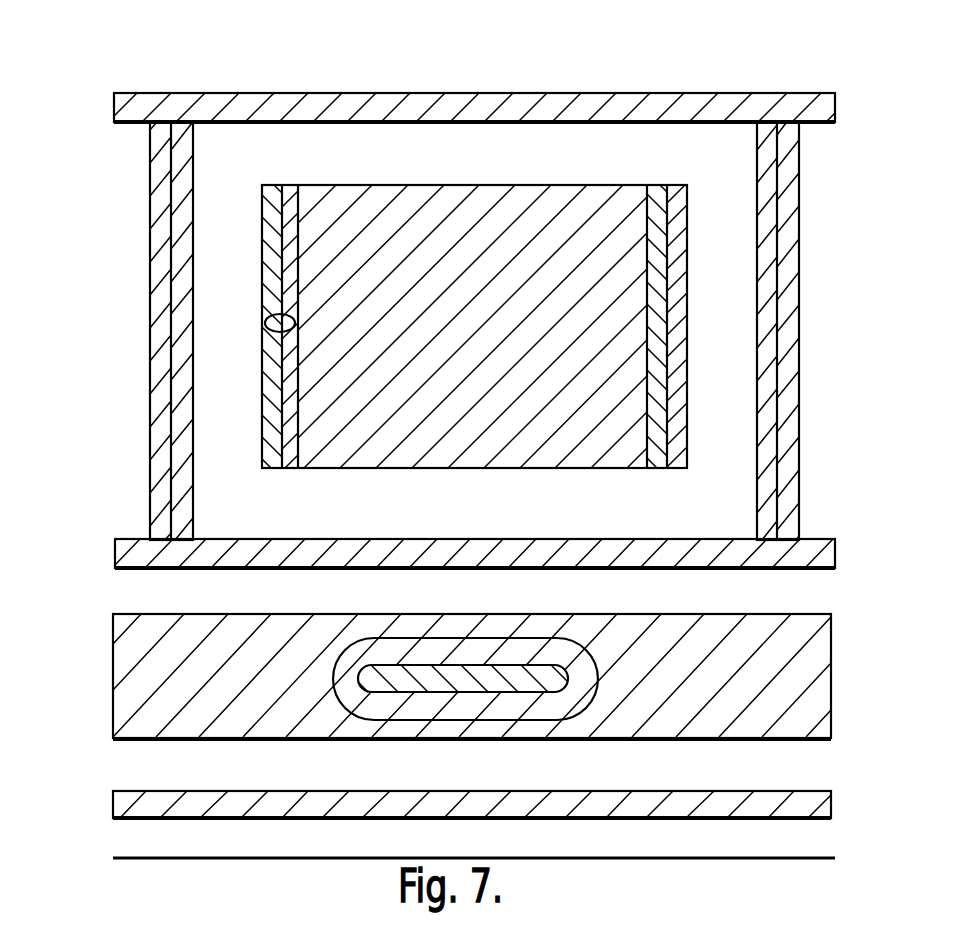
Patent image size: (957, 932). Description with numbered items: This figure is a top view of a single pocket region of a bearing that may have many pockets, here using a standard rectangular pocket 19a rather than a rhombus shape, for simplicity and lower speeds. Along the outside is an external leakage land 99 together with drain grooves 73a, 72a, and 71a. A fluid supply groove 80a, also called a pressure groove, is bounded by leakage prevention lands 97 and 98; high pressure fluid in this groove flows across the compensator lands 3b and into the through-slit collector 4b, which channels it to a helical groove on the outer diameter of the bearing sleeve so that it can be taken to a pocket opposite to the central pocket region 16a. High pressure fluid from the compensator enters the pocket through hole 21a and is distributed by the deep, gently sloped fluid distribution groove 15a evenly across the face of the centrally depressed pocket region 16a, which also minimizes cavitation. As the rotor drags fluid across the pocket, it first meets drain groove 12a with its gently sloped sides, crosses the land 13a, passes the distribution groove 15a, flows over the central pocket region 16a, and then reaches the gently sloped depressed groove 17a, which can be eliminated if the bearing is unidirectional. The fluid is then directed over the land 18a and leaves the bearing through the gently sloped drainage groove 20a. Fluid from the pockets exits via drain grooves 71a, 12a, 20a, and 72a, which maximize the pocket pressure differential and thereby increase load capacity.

The drain groove 71a is at (128, 108).
The drain groove 12a is at (173, 132).
The land 13a is at (232, 210).
The fluid distribution groove 15a is at (278, 202).
The hole 21a is at (288, 316).
The central pocket region 16a is at (443, 222).
The gently sloped depressed groove 17a is at (672, 217).
The land 18a is at (718, 202).
The drainage groove 20a is at (780, 193).
The pocket 19a is at (815, 468).
The drain groove 72a is at (130, 552).
The leakage prevention land 97 is at (142, 595).
The fluid supply groove 80a is at (132, 643).
The compensator land 3b is at (345, 663).
The leakage prevention land 98 is at (137, 754).
The through-slit collector 4b is at (382, 682).
The drain groove 73a is at (132, 803).
The external leakage land 99 is at (138, 844).